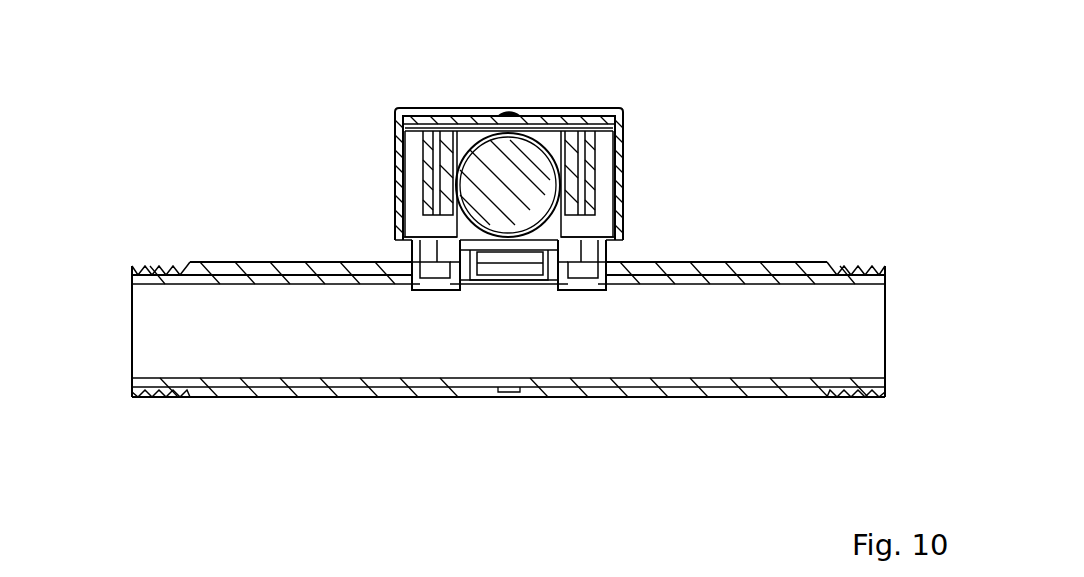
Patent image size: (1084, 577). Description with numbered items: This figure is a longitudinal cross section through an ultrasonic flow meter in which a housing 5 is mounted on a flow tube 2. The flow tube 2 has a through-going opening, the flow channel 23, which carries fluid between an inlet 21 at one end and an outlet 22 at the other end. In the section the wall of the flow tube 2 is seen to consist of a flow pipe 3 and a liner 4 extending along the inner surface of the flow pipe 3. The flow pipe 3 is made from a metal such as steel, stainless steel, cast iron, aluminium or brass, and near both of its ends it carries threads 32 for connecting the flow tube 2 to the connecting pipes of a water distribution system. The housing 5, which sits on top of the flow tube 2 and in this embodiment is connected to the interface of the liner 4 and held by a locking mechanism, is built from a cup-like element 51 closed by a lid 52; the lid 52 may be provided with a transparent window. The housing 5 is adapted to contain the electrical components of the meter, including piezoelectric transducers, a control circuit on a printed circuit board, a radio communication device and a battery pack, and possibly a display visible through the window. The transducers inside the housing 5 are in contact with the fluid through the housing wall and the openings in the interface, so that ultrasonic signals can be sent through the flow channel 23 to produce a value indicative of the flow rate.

The flow tube 2 is at (499, 305).
The inlet 21 is at (118, 323).
The outlet 22 is at (893, 331).
The flow channel 23 is at (447, 334).
The flow pipe 3 is at (231, 263).
The liner 4 is at (300, 283).
The threads 32 is at (158, 268).
The housing 5 is at (559, 158).
The cup-like element 51 is at (620, 182).
The lid 52 is at (567, 117).